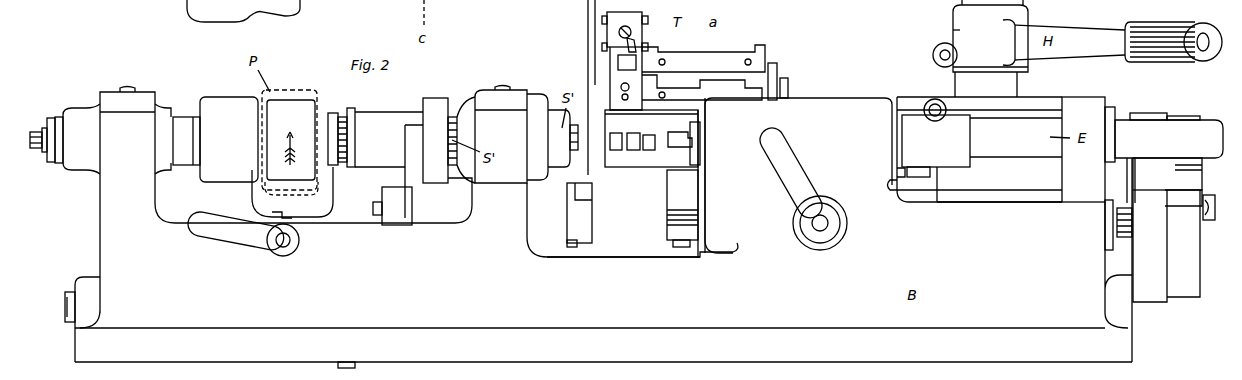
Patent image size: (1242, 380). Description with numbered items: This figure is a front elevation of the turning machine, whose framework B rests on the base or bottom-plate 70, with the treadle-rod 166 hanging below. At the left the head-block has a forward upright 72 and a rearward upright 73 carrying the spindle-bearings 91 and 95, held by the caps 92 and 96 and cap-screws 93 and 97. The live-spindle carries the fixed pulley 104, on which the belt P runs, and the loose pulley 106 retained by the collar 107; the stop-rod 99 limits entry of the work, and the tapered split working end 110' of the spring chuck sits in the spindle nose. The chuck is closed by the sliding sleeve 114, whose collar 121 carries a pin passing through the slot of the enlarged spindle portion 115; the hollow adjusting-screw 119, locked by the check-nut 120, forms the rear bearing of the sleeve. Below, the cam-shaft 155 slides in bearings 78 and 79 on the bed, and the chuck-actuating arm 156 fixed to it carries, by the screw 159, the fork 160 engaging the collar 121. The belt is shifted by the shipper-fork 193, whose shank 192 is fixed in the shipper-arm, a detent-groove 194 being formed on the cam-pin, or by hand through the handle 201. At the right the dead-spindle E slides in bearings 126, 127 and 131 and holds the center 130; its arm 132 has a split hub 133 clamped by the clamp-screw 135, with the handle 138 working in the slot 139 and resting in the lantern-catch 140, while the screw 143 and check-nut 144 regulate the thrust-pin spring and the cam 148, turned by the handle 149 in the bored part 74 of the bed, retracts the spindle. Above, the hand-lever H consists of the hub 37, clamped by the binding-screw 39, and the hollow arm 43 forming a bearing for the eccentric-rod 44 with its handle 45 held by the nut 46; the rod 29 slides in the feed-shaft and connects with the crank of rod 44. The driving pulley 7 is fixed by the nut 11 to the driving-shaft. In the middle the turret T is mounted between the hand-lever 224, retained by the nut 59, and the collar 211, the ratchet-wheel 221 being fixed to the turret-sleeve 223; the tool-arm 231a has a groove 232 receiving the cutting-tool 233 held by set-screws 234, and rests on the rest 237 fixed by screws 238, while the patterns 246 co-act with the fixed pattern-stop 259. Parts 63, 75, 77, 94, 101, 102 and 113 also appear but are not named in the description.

The driving pulley 7 is at (1190, 250).
The nut 11 is at (1207, 222).
The rod 29 is at (985, 5).
The hub 37 is at (958, 28).
The binding-screw 39 is at (936, 54).
The hollow arm 43 is at (1095, 32).
The eccentric-rod 44 is at (1203, 52).
The handle 45 is at (1165, 30).
The nut 46 is at (1204, 26).
The nut 59 is at (572, 190).
The housing 63 is at (1190, 183).
The base 70 is at (482, 345).
The forward upright 72 is at (520, 182).
The rearward upright 73 is at (115, 172).
The part of the bed 74 is at (840, 108).
The block 75 is at (1075, 172).
The lower housing 77 is at (1000, 203).
The bearing 78 is at (1122, 310).
The bearing 79 is at (90, 290).
The spindle-bearing 91 is at (470, 113).
The cap 92 is at (510, 100).
The cap-screws 93 is at (501, 88).
The collar 94 is at (540, 107).
The spindle-bearing 95 is at (85, 118).
The cap 96 is at (115, 100).
The cap-screws 97 is at (130, 88).
The stop-rod 99 is at (33, 134).
The washer 101 is at (48, 163).
The washer 102 is at (58, 118).
The fixed pulley 104 is at (292, 108).
The loose pulley 106 is at (228, 108).
The collar 107 is at (183, 165).
The working end of chuck 110' is at (599, 159).
The lock nut 113 is at (40, 148).
The sliding sleeve 114 is at (389, 118).
The enlarged portion of the spindle 115 is at (452, 128).
The adjusting-screw 119 is at (333, 115).
The check-nut 120 is at (351, 167).
The collar 121 is at (435, 165).
The bearing 126 is at (704, 145).
The bearing 127 is at (897, 135).
The center 130 is at (680, 138).
The bearing 131 is at (1112, 113).
The arm 132 is at (922, 192).
The hub 133 is at (957, 140).
The clamp-screw 135 is at (928, 104).
The handle 138 is at (893, 186).
The slot 139 is at (900, 172).
The lantern-catch 140 is at (930, 172).
The screw 143 is at (1133, 223).
The check-nut 144 is at (1110, 223).
The cam 148 is at (815, 228).
The handle 149 is at (778, 165).
The cam-shaft 155 is at (65, 303).
The chuck-actuating arm 156 is at (397, 228).
The screw 159 is at (377, 216).
The fork 160 is at (415, 147).
The treadle-rod 166 is at (343, 362).
The shank 192 is at (278, 213).
The shipper-fork 193 is at (325, 203).
The detent-groove 194 is at (286, 240).
The handle 201 is at (221, 228).
The collar 211 is at (784, 92).
The ratchet-wheel 221 is at (773, 65).
The turret-sleeve 223 is at (700, 70).
The hand-lever 224 is at (588, 33).
The tool-arm 231a is at (642, 167).
The groove 232 is at (651, 138).
The cutting-tool 233 is at (625, 148).
The set-screws 234 is at (603, 21).
The rest 237 is at (632, 245).
The screws 238 is at (570, 243).
The patterns 246 is at (688, 97).
The pattern-stop 259 is at (703, 188).